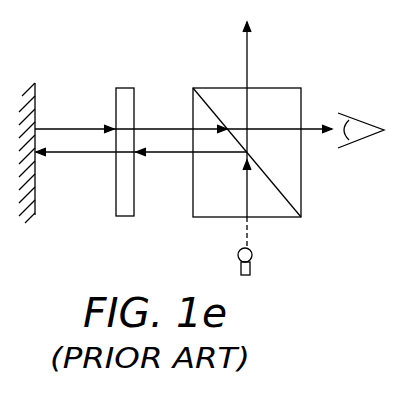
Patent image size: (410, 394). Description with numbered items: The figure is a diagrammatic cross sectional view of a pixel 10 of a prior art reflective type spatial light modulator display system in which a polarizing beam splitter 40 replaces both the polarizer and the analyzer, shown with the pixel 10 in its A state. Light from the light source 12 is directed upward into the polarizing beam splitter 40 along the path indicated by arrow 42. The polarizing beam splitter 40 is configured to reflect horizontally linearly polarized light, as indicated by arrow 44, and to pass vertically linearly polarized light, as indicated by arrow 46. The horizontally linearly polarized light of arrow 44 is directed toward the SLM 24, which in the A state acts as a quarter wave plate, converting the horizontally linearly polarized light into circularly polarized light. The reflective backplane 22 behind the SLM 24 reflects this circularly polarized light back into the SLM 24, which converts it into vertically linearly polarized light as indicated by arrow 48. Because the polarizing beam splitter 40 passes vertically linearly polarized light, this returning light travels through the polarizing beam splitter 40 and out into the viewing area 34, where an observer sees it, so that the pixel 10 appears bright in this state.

The pixel 10 is at (124, 66).
The light source 12 is at (252, 258).
The reflective backplane 22 is at (35, 205).
The SLM 24 is at (116, 216).
The viewing area 34 is at (352, 143).
The polarizing beam splitter 40 is at (295, 97).
The arrow 42 is at (248, 230).
The arrow 44 is at (160, 153).
The arrow 46 is at (248, 74).
The arrow 48 is at (167, 128).